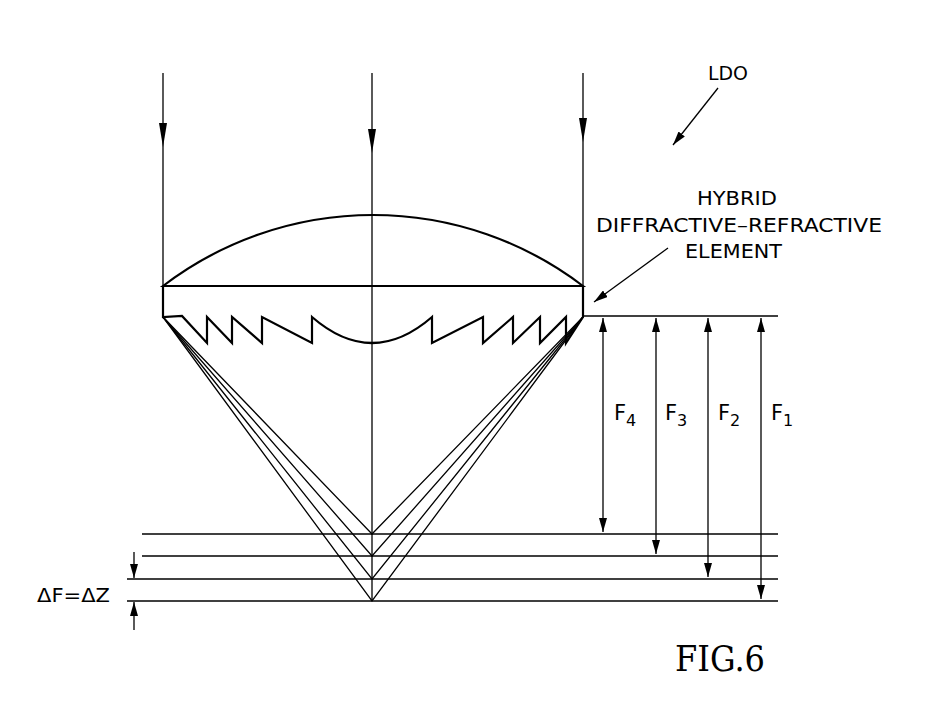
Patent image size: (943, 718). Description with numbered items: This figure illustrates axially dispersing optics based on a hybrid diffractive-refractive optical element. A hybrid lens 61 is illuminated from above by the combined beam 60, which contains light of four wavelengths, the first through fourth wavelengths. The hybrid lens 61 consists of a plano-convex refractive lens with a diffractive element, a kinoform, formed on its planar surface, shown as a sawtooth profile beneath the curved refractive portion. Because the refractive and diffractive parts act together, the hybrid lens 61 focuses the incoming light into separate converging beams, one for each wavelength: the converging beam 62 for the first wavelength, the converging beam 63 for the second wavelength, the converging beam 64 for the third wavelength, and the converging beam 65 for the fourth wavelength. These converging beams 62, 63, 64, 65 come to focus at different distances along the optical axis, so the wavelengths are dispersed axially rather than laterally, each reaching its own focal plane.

The combined beam 60 is at (373, 96).
The hybrid lens 61 is at (177, 299).
The converging beam λ1 62 is at (357, 590).
The converging beam λ2 63 is at (393, 567).
The converging beam λ3 64 is at (357, 550).
The converging beam λ4 65 is at (451, 450).